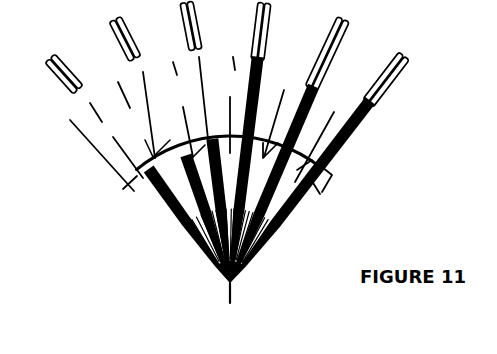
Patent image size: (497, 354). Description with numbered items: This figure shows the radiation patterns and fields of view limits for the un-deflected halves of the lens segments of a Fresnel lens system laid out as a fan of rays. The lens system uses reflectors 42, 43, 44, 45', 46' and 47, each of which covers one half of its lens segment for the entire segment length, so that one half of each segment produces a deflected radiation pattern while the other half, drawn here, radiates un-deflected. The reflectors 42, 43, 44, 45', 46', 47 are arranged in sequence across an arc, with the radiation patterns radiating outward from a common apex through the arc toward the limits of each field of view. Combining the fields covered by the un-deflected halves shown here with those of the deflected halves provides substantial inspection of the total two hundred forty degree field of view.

The reflector 42 is at (140, 160).
The reflector 43 is at (167, 127).
The reflector 44 is at (214, 117).
The reflector 45' is at (261, 142).
The reflector 46' is at (289, 150).
The reflector 47 is at (329, 163).